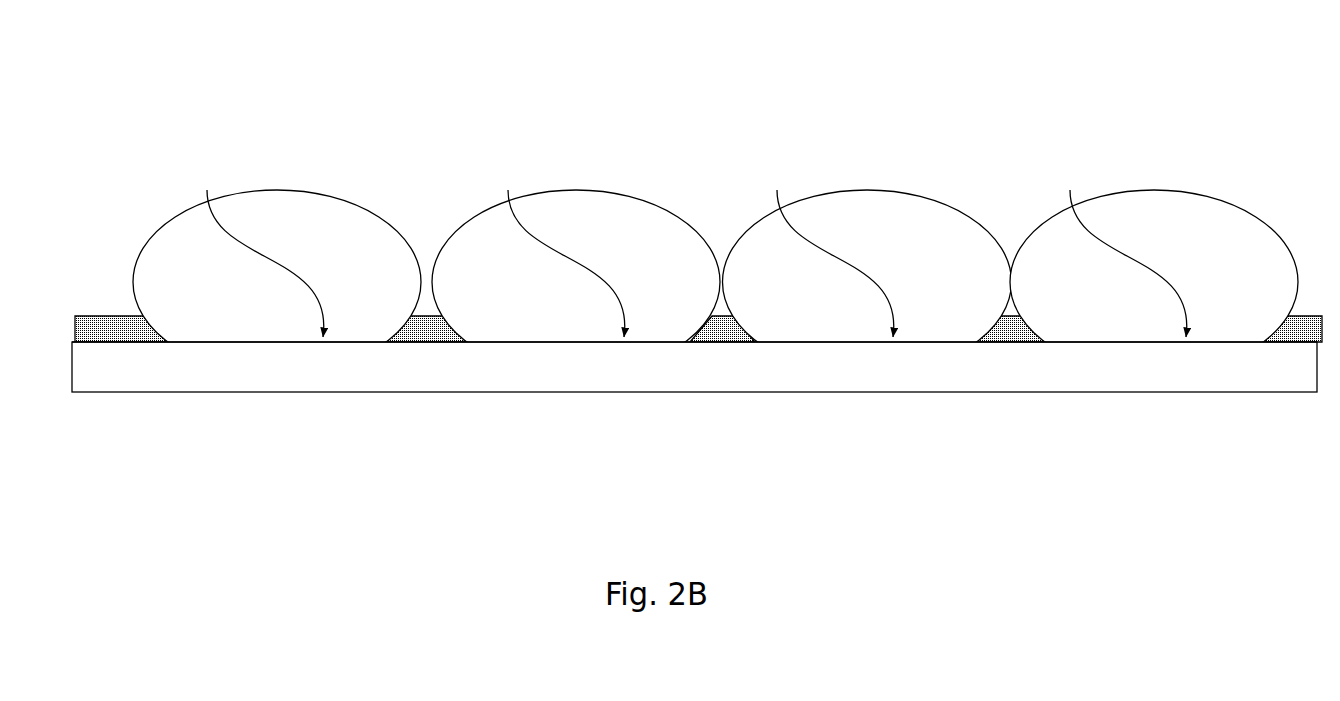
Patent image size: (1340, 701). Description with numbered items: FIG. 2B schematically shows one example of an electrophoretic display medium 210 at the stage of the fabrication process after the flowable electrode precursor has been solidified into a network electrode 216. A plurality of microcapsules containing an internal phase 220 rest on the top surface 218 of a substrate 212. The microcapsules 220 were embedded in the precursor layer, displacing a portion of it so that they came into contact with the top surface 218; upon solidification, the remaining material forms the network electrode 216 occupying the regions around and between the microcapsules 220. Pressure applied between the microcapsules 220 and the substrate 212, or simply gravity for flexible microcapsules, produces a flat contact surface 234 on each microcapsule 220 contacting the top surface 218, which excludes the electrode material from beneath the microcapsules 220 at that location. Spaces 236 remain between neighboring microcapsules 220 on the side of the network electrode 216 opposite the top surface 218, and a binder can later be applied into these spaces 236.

The electrophoretic display medium 210 is at (210, 118).
The substrate 212 is at (278, 367).
The network electrode 216 is at (437, 333).
The top surface of the substrate 218 is at (178, 346).
The microcapsules containing an internal phase 220 is at (305, 193).
The flat contact surface 234 is at (688, 249).
The spaces between the plurality of microcapsules 236 is at (430, 240).